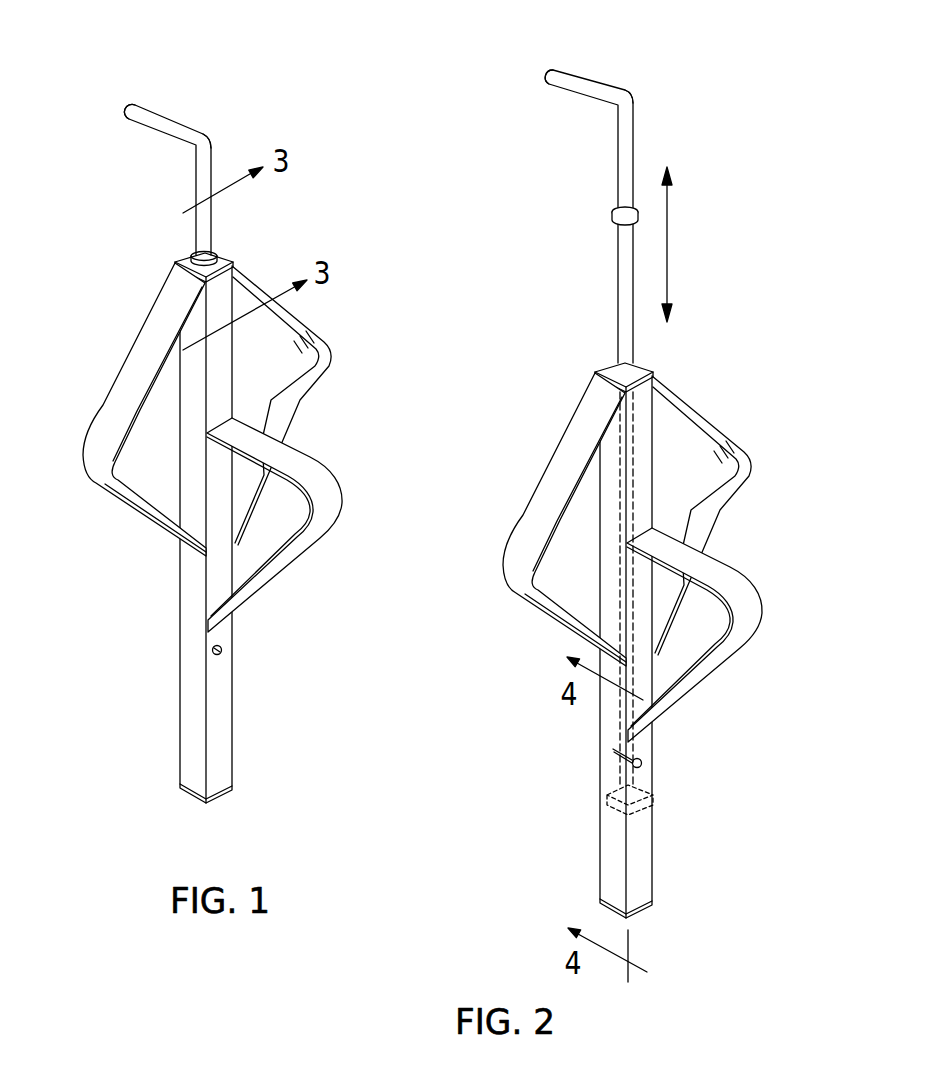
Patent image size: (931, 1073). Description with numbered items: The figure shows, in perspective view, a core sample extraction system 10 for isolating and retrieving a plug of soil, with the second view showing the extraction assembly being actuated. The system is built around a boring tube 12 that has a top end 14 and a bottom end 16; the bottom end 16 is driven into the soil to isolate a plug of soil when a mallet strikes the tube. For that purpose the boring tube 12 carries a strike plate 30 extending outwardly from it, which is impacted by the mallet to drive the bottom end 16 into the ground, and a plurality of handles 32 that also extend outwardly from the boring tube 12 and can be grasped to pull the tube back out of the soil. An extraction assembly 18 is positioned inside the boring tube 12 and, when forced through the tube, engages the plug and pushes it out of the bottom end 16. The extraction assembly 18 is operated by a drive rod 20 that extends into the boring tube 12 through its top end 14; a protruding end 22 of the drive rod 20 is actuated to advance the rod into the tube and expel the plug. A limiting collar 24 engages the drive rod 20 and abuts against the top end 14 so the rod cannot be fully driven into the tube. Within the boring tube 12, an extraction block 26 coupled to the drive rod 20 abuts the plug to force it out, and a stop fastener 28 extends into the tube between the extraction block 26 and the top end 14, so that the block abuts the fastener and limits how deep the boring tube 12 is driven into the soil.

In FIG. 1, the core sample extraction system 10 is at (276, 89).
In FIG. 1, the boring tube 12 is at (234, 708).
In FIG. 2, the boring tube 12 is at (661, 647).
In FIG. 1, the top end 14 is at (232, 259).
In FIG. 2, the top end 14 is at (649, 362).
In FIG. 1, the bottom end 16 is at (220, 802).
In FIG. 2, the bottom end 16 is at (635, 930).
In FIG. 1, the extraction assembly 18 is at (212, 136).
In FIG. 2, the extraction assembly 18 is at (633, 101).
In FIG. 1, the drive rod 20 is at (195, 238).
In FIG. 2, the drive rod 20 is at (617, 292).
In FIG. 1, the protruding end 22 is at (167, 115).
In FIG. 2, the protruding end 22 is at (588, 77).
In FIG. 1, the limiting collar 24 is at (218, 252).
In FIG. 2, the limiting collar 24 is at (611, 210).
In FIG. 2, the extraction block 26 is at (607, 806).
In FIG. 1, the stop fastener 28 is at (223, 651).
In FIG. 2, the stop fastener 28 is at (656, 763).
In FIG. 1, the strike plate 30 is at (316, 458).
In FIG. 2, the strike plate 30 is at (711, 635).
In FIG. 1, the handles 32 is at (329, 352).
In FIG. 2, the handles 32 is at (626, 519).